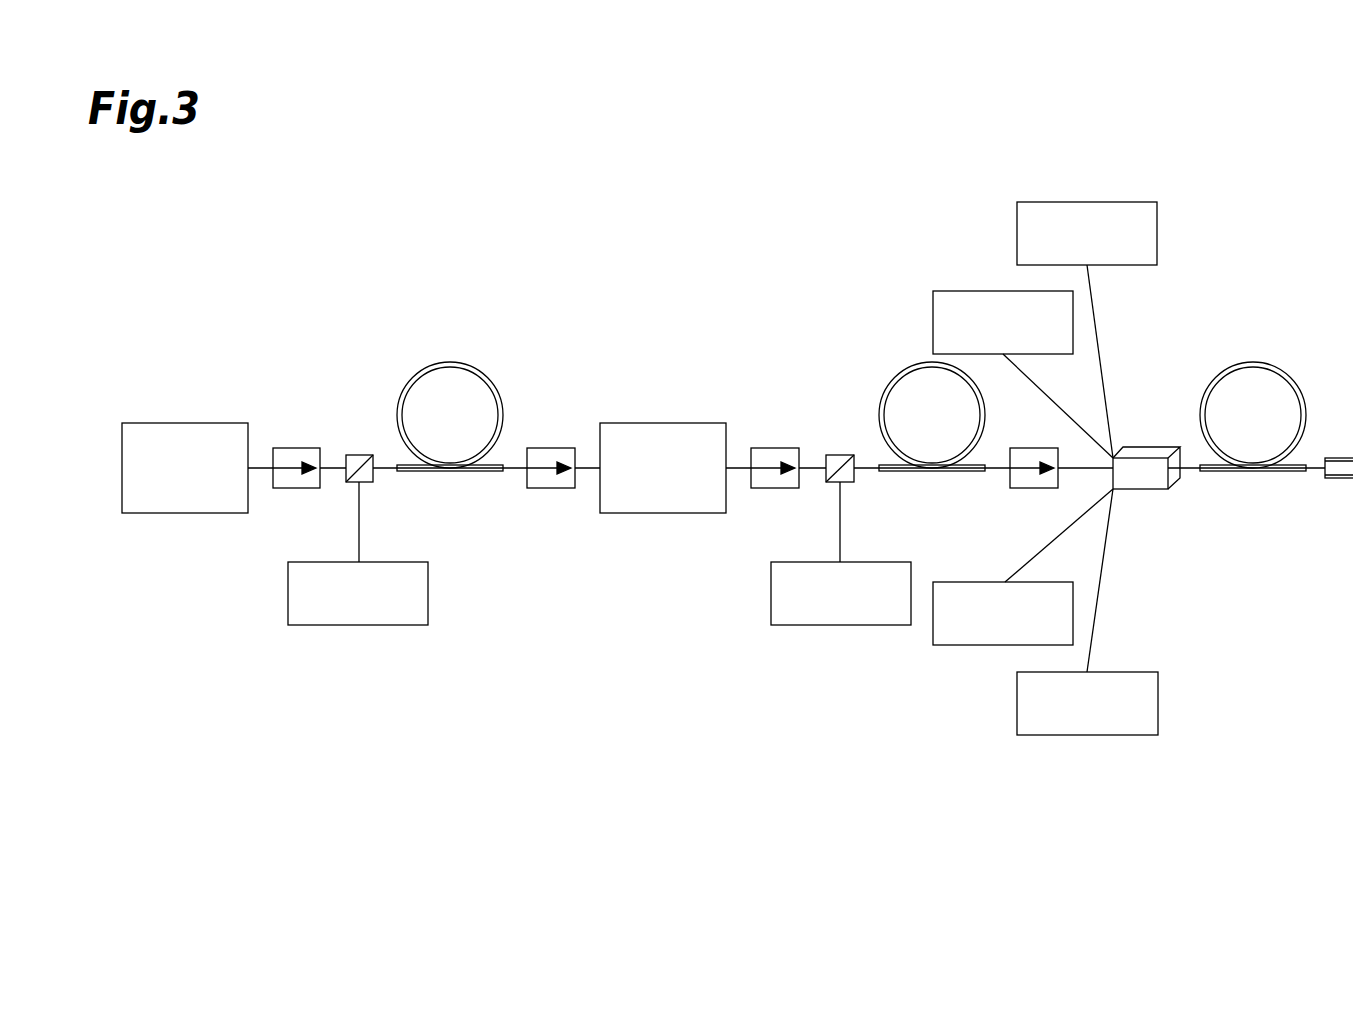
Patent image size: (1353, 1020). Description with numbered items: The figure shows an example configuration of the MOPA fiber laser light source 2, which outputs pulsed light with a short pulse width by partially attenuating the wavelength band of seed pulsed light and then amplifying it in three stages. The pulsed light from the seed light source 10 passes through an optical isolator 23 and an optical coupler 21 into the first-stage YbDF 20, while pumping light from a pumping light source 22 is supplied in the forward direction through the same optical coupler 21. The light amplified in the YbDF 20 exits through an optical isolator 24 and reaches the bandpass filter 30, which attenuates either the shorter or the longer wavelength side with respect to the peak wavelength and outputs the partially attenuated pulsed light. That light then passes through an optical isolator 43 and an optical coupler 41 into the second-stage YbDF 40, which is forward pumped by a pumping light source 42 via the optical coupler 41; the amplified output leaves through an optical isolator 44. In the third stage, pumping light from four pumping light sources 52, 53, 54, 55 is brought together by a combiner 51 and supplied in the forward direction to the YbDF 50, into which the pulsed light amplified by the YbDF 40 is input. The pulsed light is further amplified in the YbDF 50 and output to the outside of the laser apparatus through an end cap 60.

The MOPA fiber laser light source 2 is at (1250, 217).
The seed light source 10 is at (185, 423).
The YbDF 20 is at (449, 363).
The optical coupler 21 is at (359, 455).
The pumping light source 22 is at (360, 625).
The optical isolator 23 is at (295, 448).
The optical isolator 24 is at (549, 448).
The bandpass filter 30 is at (658, 423).
The YbDF 40 is at (908, 370).
The optical coupler 41 is at (840, 455).
The pumping light source 42 is at (844, 625).
The optical isolator 43 is at (774, 448).
The optical isolator 44 is at (1022, 488).
The YbDF 50 is at (1251, 363).
The combiner 51 is at (1150, 447).
The pumping light source 52 is at (1088, 202).
The pumping light source 53 is at (977, 291).
The pumping light source 54 is at (978, 645).
The pumping light source 55 is at (1088, 735).
The end cap 60 is at (1340, 478).